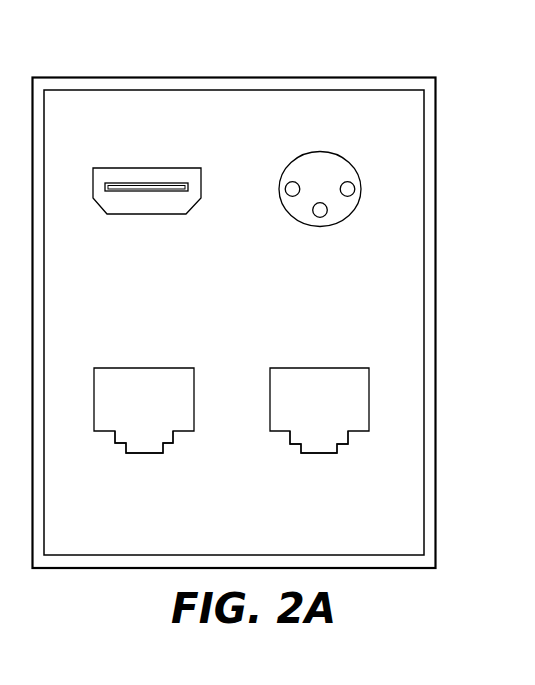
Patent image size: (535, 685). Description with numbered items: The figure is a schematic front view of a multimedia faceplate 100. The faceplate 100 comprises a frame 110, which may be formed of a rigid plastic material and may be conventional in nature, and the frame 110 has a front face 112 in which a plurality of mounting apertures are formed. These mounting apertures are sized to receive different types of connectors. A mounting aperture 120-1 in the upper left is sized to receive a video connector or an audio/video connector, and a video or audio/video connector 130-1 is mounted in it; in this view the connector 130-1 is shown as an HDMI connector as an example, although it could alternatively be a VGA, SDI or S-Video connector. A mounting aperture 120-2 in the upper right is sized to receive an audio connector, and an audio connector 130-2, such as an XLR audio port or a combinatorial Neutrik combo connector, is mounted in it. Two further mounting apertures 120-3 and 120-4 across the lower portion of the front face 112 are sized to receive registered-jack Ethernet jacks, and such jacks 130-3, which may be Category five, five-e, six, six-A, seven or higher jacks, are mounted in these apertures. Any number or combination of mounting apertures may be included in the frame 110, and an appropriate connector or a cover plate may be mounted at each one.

The multimedia faceplate 100 is at (248, 51).
The frame 110 is at (101, 77).
The front face 112 is at (410, 467).
The mounting aperture 120-1 is at (156, 168).
The mounting aperture 120-2 is at (328, 151).
The mounting aperture 120-3 is at (143, 367).
The mounting aperture 120-4 is at (318, 367).
The video or audio/video connector 130-1 is at (115, 202).
The audio connector 130-2 is at (348, 200).
The RJ-45 jacks 130-3 is at (117, 409).